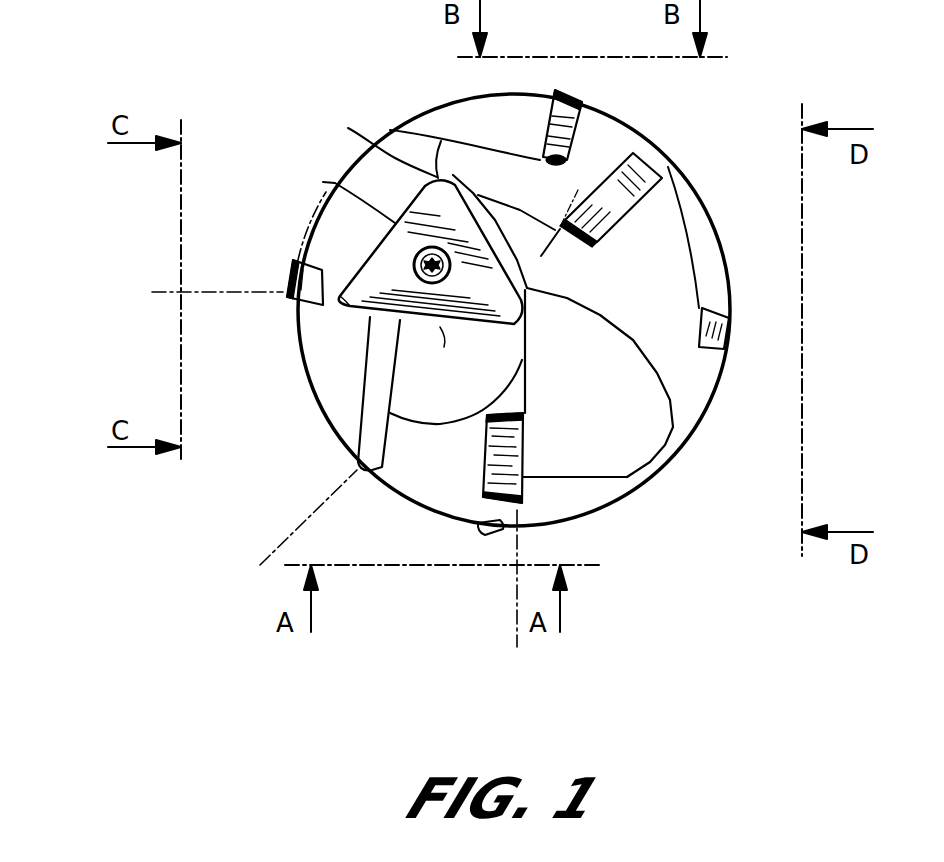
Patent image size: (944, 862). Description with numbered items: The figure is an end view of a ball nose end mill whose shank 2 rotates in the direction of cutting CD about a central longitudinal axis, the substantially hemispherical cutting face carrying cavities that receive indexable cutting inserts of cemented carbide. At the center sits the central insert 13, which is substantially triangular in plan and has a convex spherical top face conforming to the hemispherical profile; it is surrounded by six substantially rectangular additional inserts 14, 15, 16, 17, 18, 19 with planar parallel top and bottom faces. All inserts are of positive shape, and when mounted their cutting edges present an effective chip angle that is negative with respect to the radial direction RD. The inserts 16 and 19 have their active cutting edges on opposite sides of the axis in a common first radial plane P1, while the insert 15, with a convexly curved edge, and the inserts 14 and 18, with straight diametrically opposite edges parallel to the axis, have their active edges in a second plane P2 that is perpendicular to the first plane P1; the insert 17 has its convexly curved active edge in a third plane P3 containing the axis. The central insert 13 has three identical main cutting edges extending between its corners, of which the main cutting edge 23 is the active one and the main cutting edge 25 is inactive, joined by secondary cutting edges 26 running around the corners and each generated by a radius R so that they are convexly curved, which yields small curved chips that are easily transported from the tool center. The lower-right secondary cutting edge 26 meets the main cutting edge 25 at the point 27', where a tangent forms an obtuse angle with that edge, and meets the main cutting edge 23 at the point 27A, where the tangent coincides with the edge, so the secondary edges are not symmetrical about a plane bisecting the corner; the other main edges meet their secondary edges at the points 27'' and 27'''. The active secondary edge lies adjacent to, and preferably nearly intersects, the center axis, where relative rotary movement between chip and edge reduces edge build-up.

The drill body 2 is at (312, 178).
The central insert 13 is at (514, 268).
The additional insert 14 is at (490, 527).
The additional insert 15 is at (510, 450).
The additional insert 16 is at (729, 347).
The additional insert 17 is at (618, 205).
The additional insert 18 is at (572, 93).
The additional insert 19 is at (287, 303).
The main cutting edge 23 is at (440, 326).
The main cutting edge 25 is at (500, 221).
The secondary cutting edge 26 is at (480, 327).
The point 27' is at (600, 382).
The point 27'' is at (339, 334).
The point 27''' is at (374, 143).
The point 27A is at (468, 350).
The radius R is at (496, 313).
The radial direction RD is at (610, 150).
The direction of cutting CD is at (695, 505).
The first radial plane P1 is at (267, 276).
The second plane P2 is at (520, 552).
The third plane P3 is at (328, 488).